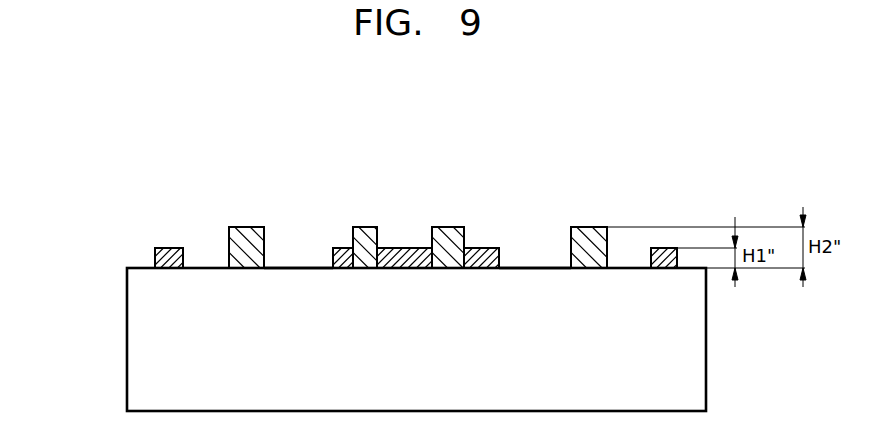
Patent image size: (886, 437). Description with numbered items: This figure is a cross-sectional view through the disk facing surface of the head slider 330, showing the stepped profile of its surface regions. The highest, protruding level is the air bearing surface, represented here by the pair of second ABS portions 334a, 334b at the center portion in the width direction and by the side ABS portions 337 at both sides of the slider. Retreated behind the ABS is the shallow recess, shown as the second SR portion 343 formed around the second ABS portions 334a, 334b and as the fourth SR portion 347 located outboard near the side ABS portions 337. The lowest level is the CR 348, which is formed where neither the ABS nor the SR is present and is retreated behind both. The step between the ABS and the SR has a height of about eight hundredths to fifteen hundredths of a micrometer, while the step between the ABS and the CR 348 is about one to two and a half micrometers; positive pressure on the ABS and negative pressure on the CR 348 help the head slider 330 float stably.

The head slider 330 is at (127, 195).
The fourth SR portion 347 is at (170, 248).
The side ABS portion 337 is at (243, 227).
The CR 348 is at (298, 266).
The second SR portion 343 is at (338, 248).
The second ABS portion 334a is at (365, 227).
The second ABS portion 334b is at (450, 227).